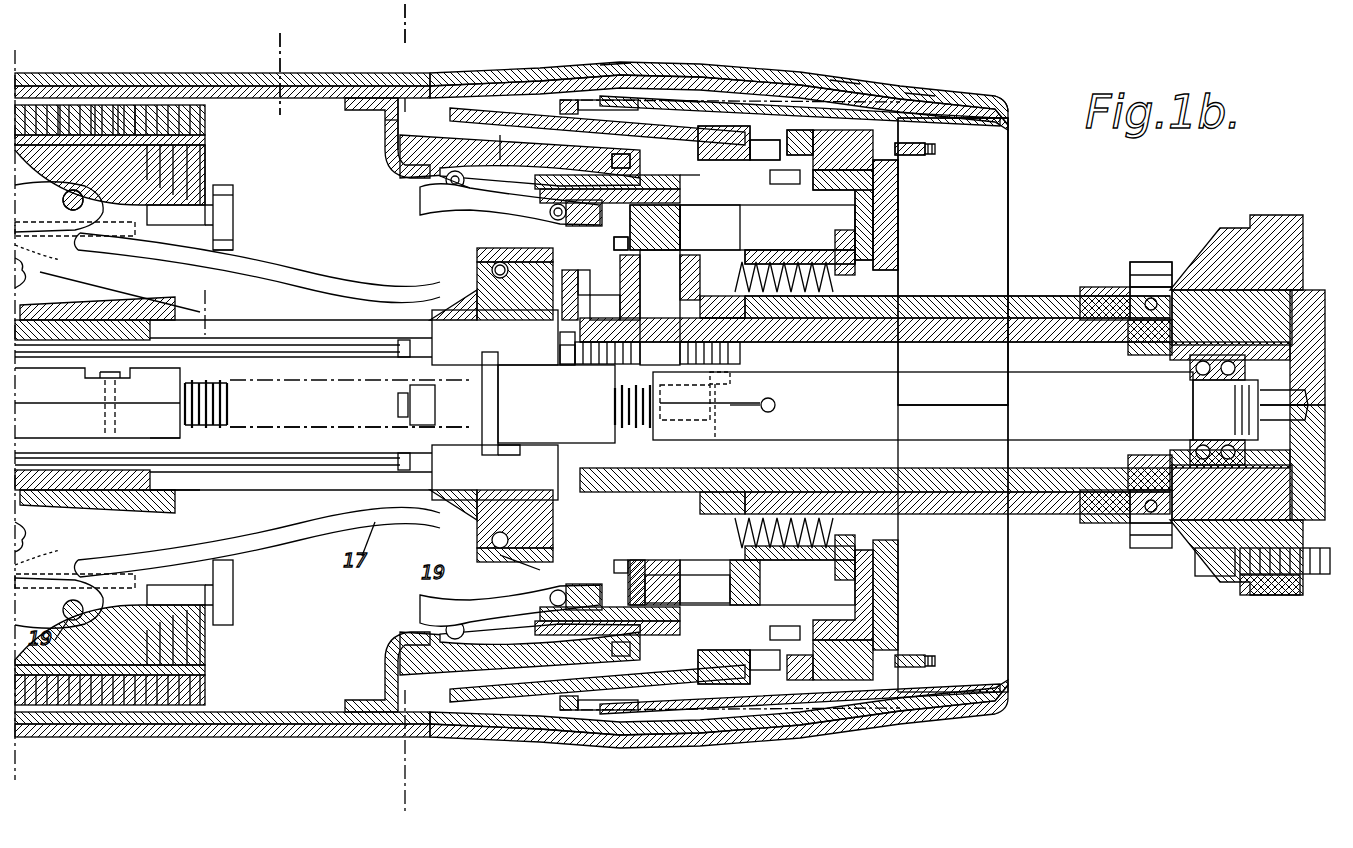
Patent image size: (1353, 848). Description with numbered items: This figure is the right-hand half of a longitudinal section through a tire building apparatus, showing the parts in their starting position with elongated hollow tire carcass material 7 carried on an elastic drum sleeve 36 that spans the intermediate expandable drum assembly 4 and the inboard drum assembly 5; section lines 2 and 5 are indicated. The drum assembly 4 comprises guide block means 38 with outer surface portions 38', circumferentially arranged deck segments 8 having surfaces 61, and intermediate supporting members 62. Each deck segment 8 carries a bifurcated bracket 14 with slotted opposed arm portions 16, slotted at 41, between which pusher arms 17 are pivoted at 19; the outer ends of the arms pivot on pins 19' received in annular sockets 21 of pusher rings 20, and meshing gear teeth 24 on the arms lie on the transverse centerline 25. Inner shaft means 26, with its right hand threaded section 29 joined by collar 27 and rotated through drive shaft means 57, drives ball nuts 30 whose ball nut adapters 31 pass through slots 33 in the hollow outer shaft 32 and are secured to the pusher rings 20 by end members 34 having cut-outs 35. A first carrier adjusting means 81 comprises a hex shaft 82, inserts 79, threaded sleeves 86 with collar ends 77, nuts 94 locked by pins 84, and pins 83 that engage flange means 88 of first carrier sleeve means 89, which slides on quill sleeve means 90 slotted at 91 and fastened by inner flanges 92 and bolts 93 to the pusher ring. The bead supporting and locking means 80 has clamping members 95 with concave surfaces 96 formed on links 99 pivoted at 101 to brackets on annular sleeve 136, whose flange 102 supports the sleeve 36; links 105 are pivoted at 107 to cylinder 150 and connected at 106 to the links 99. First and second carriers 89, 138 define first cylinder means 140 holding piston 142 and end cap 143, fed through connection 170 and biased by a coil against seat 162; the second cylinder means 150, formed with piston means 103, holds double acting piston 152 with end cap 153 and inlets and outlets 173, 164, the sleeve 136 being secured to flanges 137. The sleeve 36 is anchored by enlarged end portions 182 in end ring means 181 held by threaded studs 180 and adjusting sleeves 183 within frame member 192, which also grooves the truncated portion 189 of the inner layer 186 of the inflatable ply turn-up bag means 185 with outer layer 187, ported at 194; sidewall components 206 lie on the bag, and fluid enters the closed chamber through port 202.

The section line 2 is at (258, 52).
The intermediate expandable drum assembly 4 is at (222, 164).
The inboard drum assembly 5 is at (972, 56).
The tire carcass material 7 is at (205, 100).
The deck segment 8 is at (222, 205).
The bifurcated bracket 14 is at (236, 218).
The opposed arm portions 16 is at (236, 240).
The pusher arm 17 is at (342, 280).
The pivot 19 is at (55, 182).
The pivot pin 19' is at (491, 284).
The pusher ring 20 is at (505, 300).
The annular socket 21 is at (500, 572).
The meshing gear teeth 24 is at (34, 399).
The transverse centerline 25 is at (95, 311).
The inner shaft means 26 is at (356, 440).
The collar 27 is at (155, 440).
The right hand threaded shaft section 29 is at (237, 404).
The ball nut 30 is at (540, 418).
The ball nut adapter 31 is at (354, 393).
The hollow outer shaft 32 is at (905, 342).
The axially extending slot 33 is at (362, 348).
The end member 34 is at (503, 455).
The cut-out 35 is at (488, 370).
The elastic drum sleeve 36 is at (200, 80).
The guide block means 38 is at (120, 290).
The outer surface portions of guide block 38' is at (259, 253).
The slot 41 is at (200, 505).
The drive shaft means 57 is at (975, 413).
The surfaces of deck segments 61 is at (135, 108).
The intermediate supporting member 62 is at (90, 108).
The collar end 77 is at (425, 385).
The insert 79 is at (402, 382).
The bead supporting and locking means 80 is at (412, 110).
The first carrier adjusting means 81 is at (183, 370).
The hex shaft 82 is at (255, 360).
The pin 83 is at (660, 307).
The lock pin 84 is at (560, 345).
The threaded sleeve 86 is at (742, 352).
The flange means 88 is at (620, 294).
The first carrier sleeve means 89 is at (1008, 282).
The quill sleeve means 90 is at (1015, 322).
The slot in quill 91 is at (735, 315).
The inner flange 92 is at (578, 280).
The bolt 93 is at (595, 278).
The nut 94 is at (565, 365).
The clamping member 95 is at (386, 142).
The concave surface 96 is at (422, 134).
The link 99 is at (516, 143).
The pivot 101 is at (630, 158).
The flange 102 is at (345, 104).
The piston means 103 is at (604, 240).
The link 105 is at (478, 200).
The pivot connection 106 is at (448, 186).
The pivot 107 is at (550, 213).
The annular sleeve 136 is at (695, 182).
The radially outwardly extending flange 137 is at (800, 130).
The second carrier sleeve means 138 is at (870, 220).
The first cylinder means 140 is at (830, 262).
The piston 142 is at (840, 292).
The end cap 143 is at (898, 262).
The second cylinder means 150 is at (664, 227).
The double acting piston 152 is at (730, 592).
The end cap 153 is at (628, 565).
The seat 162 is at (660, 287).
The second fluid pressure inlet and outlet 164 is at (710, 227).
The fluid pressure connection 170 is at (870, 245).
The first fluid pressure inlet and outlet 173 is at (825, 182).
The threaded stud 180 is at (762, 140).
The end ring means 181 is at (723, 126).
The enlarged annular end portion 182 is at (716, 668).
The threaded adjusting sleeve 183 is at (890, 146).
The inflatable ply turn-up bag means 185 is at (1007, 96).
The inner layer 186 is at (955, 115).
The outer layer 187 is at (920, 92).
The truncated portion 189 is at (612, 72).
The annular end drum frame member 192 is at (675, 100).
The port 194 is at (565, 95).
The fluid port 202 is at (1190, 392).
The sidewall component 206 is at (845, 82).